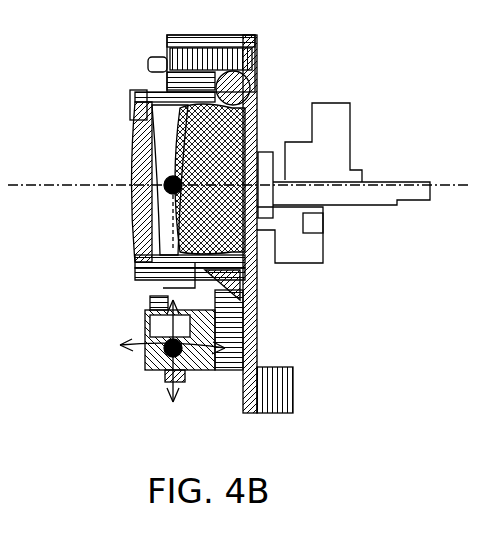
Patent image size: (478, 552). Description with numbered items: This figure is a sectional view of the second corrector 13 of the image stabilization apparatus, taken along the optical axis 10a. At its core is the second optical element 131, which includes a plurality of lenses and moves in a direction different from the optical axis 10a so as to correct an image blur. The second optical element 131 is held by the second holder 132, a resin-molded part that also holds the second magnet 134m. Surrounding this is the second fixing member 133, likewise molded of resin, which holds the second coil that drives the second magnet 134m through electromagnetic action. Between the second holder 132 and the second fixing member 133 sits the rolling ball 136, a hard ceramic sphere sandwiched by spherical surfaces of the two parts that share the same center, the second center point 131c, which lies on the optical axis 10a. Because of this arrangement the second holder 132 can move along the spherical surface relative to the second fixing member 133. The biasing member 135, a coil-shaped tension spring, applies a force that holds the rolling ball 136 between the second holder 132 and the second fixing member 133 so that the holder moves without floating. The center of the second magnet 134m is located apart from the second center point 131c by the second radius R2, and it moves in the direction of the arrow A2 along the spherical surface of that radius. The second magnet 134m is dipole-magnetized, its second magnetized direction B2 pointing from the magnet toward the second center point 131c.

The second corrector 13 is at (406, 46).
The optical axis 10a is at (45, 183).
The second optical element 131 is at (135, 226).
The second center point 131c is at (165, 183).
The second holder 132 is at (136, 262).
The second fixing member 133 is at (257, 47).
The biasing member 135 is at (150, 301).
The rolling ball 136 is at (250, 86).
The second magnet 134m is at (162, 370).
The second radius R2 is at (160, 272).
The arrow A2 is at (140, 352).
The second magnetized direction B2 is at (185, 388).